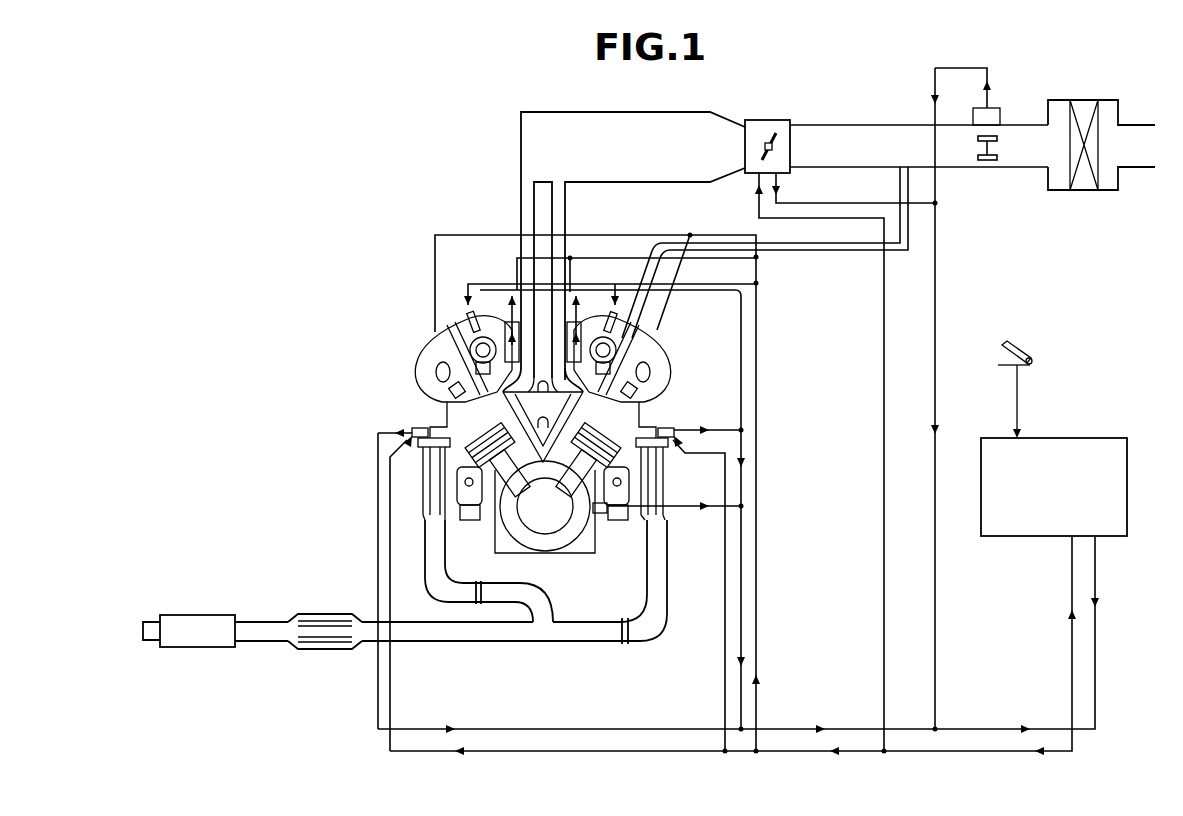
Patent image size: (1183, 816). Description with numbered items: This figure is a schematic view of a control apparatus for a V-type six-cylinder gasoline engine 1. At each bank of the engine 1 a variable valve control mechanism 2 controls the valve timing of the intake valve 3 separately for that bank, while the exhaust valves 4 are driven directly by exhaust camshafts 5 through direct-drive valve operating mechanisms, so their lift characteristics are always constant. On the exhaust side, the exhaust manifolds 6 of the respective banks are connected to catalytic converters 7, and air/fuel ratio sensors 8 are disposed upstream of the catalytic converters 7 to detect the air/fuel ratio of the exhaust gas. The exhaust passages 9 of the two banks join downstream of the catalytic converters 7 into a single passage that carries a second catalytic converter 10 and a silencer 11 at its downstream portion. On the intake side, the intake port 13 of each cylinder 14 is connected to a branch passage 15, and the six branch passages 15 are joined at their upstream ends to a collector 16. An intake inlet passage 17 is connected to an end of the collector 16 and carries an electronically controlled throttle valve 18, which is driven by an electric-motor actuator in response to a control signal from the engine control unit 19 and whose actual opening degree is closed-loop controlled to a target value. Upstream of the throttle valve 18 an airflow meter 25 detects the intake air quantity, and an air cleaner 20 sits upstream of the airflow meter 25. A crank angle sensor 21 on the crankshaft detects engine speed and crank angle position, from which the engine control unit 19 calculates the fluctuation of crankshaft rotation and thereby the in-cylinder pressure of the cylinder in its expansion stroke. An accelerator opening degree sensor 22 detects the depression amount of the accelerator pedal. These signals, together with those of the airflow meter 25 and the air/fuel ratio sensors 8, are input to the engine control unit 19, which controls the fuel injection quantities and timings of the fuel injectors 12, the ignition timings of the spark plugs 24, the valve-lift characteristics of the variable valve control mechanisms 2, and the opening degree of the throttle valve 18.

The V-type internal combustion engine 1 is at (388, 340).
The variable valve control mechanism 2 is at (461, 328).
The intake valve 3 is at (455, 347).
The exhaust valve 4 is at (448, 393).
The exhaust camshaft 5 is at (436, 373).
The exhaust manifold 6 is at (648, 412).
The catalytic converter 7 is at (432, 488).
The air/fuel ratio sensor 8 is at (675, 427).
The exhaust passage 9 is at (436, 548).
The second catalytic converter 10 is at (325, 641).
The silencer 11 is at (206, 645).
The fuel injector 12 is at (625, 338).
The intake port 13 is at (505, 328).
The cylinder 14 is at (502, 549).
The branch passage 15 is at (562, 290).
The collector 16 is at (588, 127).
The intake inlet passage 17 is at (738, 128).
The electronically controlled throttle valve 18 is at (771, 128).
The engine control unit 19 is at (1073, 438).
The air cleaner 20 is at (1085, 100).
The crank angle sensor 21 is at (600, 515).
The accelerator opening degree sensor 22 is at (998, 357).
The spark plug 24 is at (628, 362).
The airflow meter 25 is at (1000, 118).